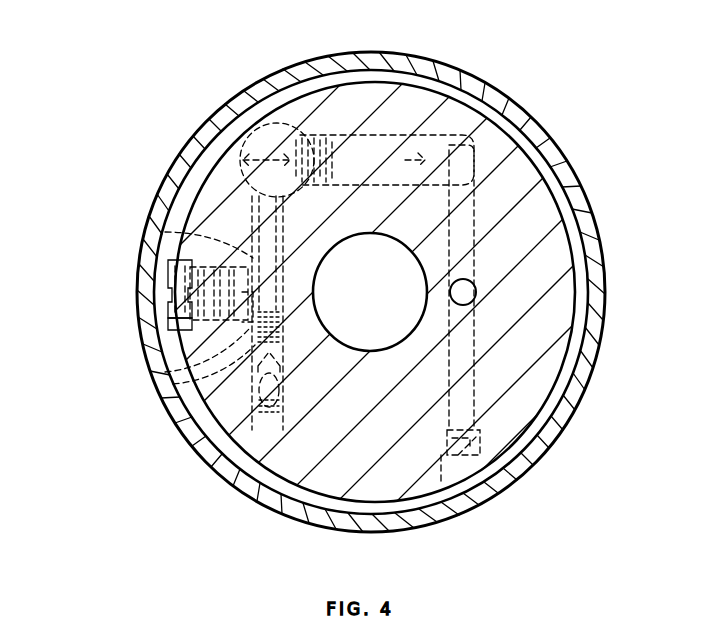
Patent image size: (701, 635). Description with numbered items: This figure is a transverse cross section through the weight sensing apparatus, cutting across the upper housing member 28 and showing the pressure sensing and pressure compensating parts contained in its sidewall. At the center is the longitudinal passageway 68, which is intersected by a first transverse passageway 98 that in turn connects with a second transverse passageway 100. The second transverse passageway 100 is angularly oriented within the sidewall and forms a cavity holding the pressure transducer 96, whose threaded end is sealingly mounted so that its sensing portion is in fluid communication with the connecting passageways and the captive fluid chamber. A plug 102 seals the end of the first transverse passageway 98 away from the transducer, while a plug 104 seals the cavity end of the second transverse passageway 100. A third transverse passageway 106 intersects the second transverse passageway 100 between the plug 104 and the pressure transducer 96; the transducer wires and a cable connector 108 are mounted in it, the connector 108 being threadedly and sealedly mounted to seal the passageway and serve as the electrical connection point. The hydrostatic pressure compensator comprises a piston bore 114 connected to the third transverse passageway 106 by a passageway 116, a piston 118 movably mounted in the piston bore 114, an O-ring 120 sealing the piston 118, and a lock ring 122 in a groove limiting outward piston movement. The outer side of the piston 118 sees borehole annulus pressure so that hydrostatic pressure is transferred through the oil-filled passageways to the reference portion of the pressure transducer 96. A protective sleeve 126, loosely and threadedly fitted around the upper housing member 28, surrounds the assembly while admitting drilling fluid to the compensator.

The upper housing member 28 is at (511, 178).
The longitudinal passageway 68 is at (477, 292).
The pressure transducer 96 is at (384, 94).
The first transverse passageway 98 is at (472, 227).
The second transverse passageway 100 is at (480, 87).
The plug 102 is at (470, 433).
The plug 104 is at (249, 136).
The third transverse passageway 106 is at (253, 216).
The cable connector 108 is at (173, 384).
The piston bore 114 is at (165, 371).
The passageway 116 is at (165, 232).
The piston 118 is at (190, 298).
The O-ring 120 is at (175, 316).
The lock ring 122 is at (172, 278).
The protective sleeve 126 is at (567, 173).